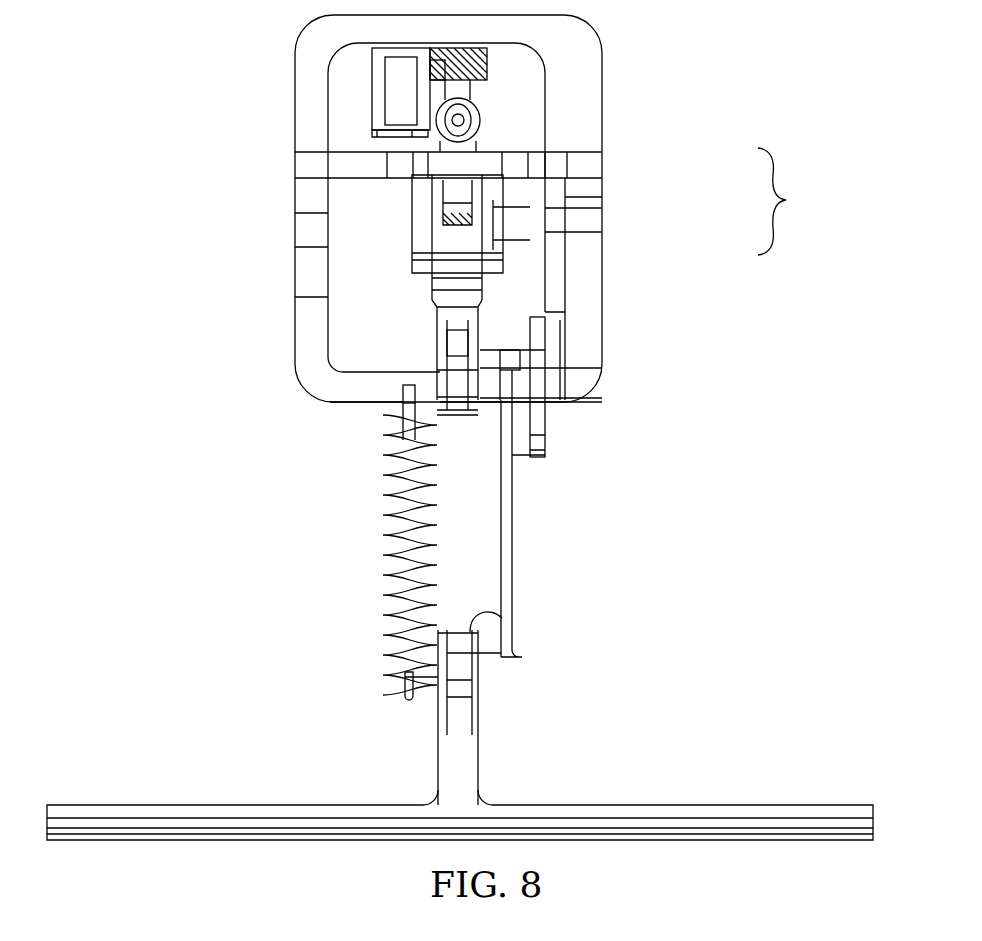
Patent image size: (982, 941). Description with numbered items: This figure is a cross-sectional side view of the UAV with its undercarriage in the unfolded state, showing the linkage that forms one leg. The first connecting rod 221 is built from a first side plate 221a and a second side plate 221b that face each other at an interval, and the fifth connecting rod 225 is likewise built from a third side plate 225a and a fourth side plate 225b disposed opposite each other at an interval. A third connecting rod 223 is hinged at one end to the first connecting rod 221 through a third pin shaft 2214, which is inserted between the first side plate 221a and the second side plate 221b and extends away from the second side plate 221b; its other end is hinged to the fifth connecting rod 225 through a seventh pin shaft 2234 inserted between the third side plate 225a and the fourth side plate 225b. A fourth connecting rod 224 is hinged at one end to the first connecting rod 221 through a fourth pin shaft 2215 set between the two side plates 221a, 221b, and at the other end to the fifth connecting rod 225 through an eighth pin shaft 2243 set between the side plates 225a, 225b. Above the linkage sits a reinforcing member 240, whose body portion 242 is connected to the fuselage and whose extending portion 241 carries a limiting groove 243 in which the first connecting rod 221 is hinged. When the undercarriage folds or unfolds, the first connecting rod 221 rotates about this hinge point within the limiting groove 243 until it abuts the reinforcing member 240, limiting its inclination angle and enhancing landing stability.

The reinforcing member 240 is at (800, 201).
The extending portion 241 is at (500, 203).
The body portion 242 is at (585, 162).
The limiting groove 243 is at (455, 240).
The first connecting rod 221 is at (437, 305).
The first side plate 221a is at (437, 372).
The second side plate 221b is at (512, 400).
The third pin shaft 2214 is at (530, 368).
The fourth pin shaft 2215 is at (403, 420).
The third connecting rod 223 is at (513, 525).
The seventh pin shaft 2234 is at (513, 627).
The fourth connecting rod 224 is at (385, 512).
The eighth pin shaft 2243 is at (425, 705).
The fifth connecting rod 225 is at (470, 750).
The third side plate 225a is at (438, 650).
The fourth side plate 225b is at (480, 657).